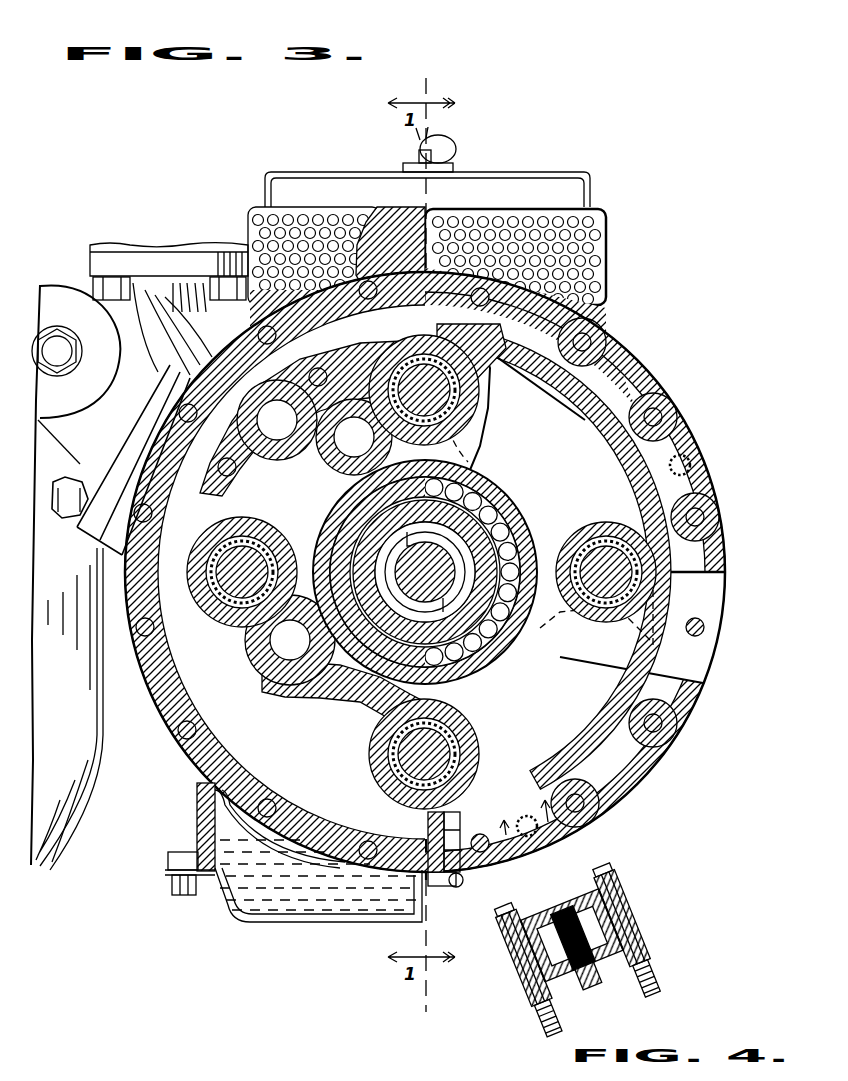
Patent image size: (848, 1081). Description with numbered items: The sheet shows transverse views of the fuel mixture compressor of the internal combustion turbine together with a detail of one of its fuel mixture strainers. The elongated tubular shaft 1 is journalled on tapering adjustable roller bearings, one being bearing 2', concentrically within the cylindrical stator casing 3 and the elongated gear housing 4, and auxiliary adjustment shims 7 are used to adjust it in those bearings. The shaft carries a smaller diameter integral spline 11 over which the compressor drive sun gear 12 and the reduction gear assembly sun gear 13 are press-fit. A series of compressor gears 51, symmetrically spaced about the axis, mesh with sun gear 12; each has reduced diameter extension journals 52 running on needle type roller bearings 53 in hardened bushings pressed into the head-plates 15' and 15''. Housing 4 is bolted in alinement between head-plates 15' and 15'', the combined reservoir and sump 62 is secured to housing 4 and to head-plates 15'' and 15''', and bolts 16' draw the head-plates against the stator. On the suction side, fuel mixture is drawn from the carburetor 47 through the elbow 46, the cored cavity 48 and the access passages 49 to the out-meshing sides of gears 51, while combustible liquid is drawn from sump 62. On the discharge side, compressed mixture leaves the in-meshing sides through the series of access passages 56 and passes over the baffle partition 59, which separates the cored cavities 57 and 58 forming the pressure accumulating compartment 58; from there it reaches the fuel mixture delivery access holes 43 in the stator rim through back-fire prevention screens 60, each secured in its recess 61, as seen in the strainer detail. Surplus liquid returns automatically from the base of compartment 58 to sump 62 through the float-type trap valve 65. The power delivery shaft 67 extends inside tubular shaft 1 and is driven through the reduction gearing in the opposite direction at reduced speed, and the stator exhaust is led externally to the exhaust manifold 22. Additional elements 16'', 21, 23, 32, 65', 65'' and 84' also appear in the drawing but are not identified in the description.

In FIG. 3, the elongated tubular shaft 1 is at (362, 521).
In FIG. 3, the tapering adjustable roller bearing 2' is at (440, 571).
In FIG. 4, the stator casing 3 is at (660, 950).
In FIG. 3, the gear housing 4 is at (523, 810).
In FIG. 4, the gear housing 4 is at (618, 873).
In FIG. 3, the auxiliary adjustment shims 7 is at (502, 545).
In FIG. 3, the smaller diameter integral spline 11 is at (367, 546).
In FIG. 3, the compressor drive sun gear 12 is at (394, 534).
In FIG. 3, the reduction gear assembly sun gear 13 is at (372, 590).
In FIG. 3, the combined turbine and compressor head-plate 15' is at (425, 572).
In FIG. 4, the combined turbine and compressor head-plate 15' is at (601, 938).
In FIG. 3, the bolts 16' is at (689, 417).
In FIG. 4, the bolts 16' is at (533, 935).
In FIG. 3, the head-plate 15'' is at (421, 572).
In FIG. 3, the housing bolt 16'' is at (157, 744).
In FIG. 3, the head-plate 15''' is at (248, 825).
In FIG. 3, the mounting plate 21 is at (84, 786).
In FIG. 3, the exhaust manifold 22 is at (105, 455).
In FIG. 3, the bolt 23 is at (78, 517).
In FIG. 3, the cover 32 is at (578, 196).
In FIG. 4, the fuel mixture delivery access holes 43 is at (604, 984).
In FIG. 3, the elbow 46 is at (168, 356).
In FIG. 3, the carburetor 47 is at (150, 243).
In FIG. 3, the cored cavity 48 is at (352, 680).
In FIG. 3, the access passages 49 is at (355, 420).
In FIG. 3, the compressor gears 51 is at (215, 553).
In FIG. 3, the extension journal means 52 is at (225, 560).
In FIG. 3, the needle type roller bearings 53 is at (230, 570).
In FIG. 3, the access passages 56 is at (490, 437).
In FIG. 3, the cored cavity 57 is at (570, 410).
In FIG. 3, the pressure accumulating compartment 58 is at (630, 380).
In FIG. 4, the pressure accumulating compartment 58 is at (525, 950).
In FIG. 3, the baffle partition 59 is at (608, 445).
In FIG. 3, the back-fire prevention screens 60 is at (528, 838).
In FIG. 4, the back-fire prevention screens 60 is at (570, 895).
In FIG. 4, the recesses 61 is at (522, 988).
In FIG. 3, the combined reservoir and sump 62 is at (288, 912).
In FIG. 3, the float-type trap-valve 65 is at (446, 896).
In FIG. 3, the plug body 65' is at (402, 835).
In FIG. 3, the plug sleeve 65'' is at (476, 854).
In FIG. 3, the power delivery shaft 67 is at (372, 624).
In FIG. 3, the screen 84' is at (427, 255).